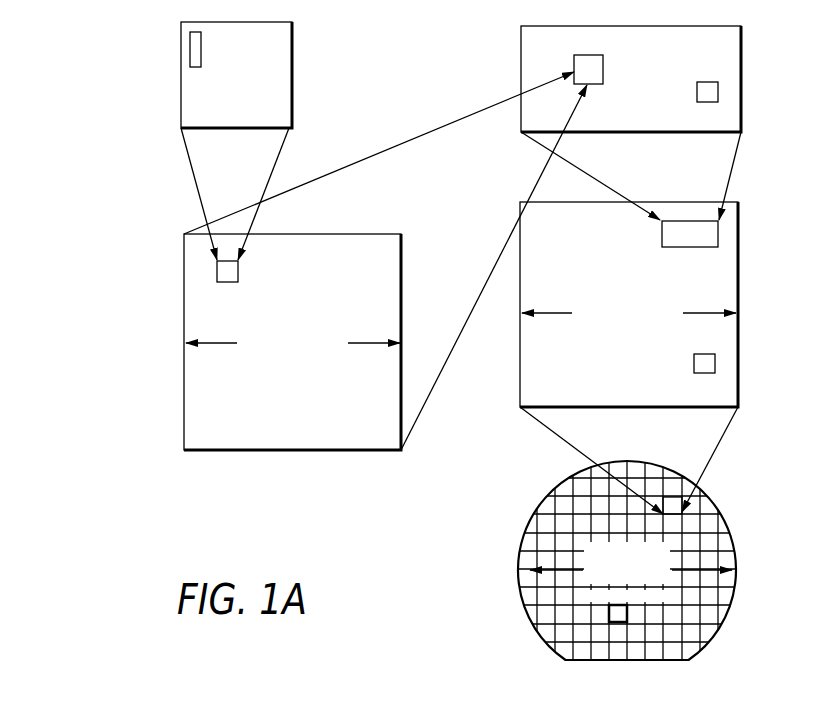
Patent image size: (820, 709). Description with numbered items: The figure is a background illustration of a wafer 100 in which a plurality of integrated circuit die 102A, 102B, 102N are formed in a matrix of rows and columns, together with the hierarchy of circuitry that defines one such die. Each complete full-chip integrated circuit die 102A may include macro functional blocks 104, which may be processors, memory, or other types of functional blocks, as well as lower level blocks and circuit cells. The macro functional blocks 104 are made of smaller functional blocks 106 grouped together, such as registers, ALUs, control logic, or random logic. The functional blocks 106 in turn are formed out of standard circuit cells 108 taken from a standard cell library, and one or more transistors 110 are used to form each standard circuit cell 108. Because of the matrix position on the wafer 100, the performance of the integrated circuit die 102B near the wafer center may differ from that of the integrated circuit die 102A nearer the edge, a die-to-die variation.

The wafer 100 is at (723, 618).
The integrated circuit die 102A is at (693, 203).
The integrated circuit die 102B is at (609, 617).
The integrated circuit die 102N is at (562, 617).
The macro functional block 104 is at (741, 53).
The functional block 106 is at (184, 438).
The standard circuit cell 108 is at (181, 118).
The transistor 110 is at (190, 62).